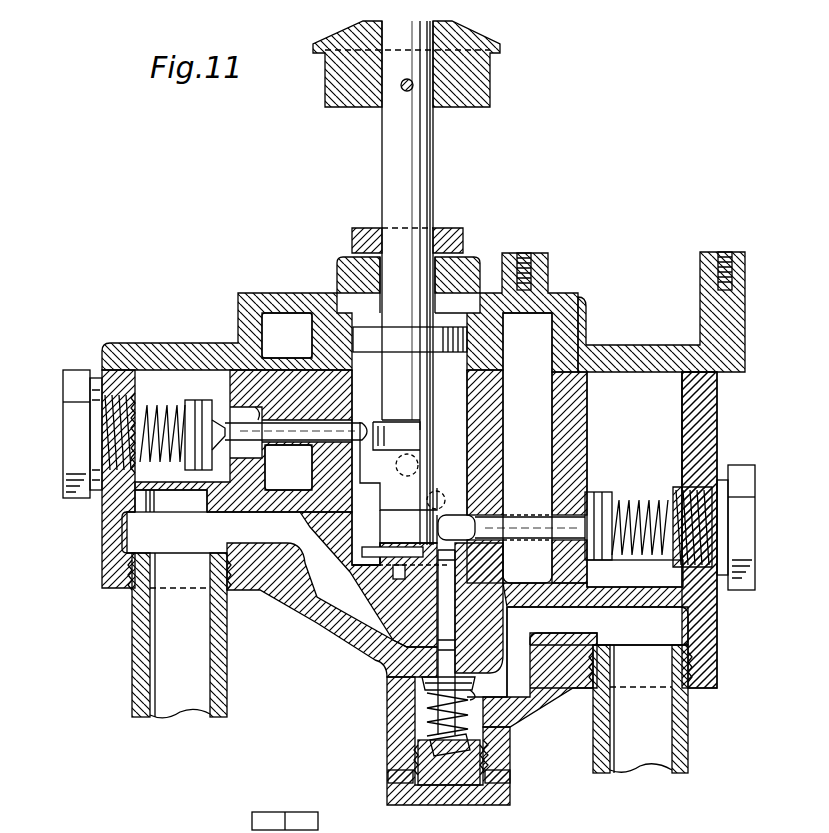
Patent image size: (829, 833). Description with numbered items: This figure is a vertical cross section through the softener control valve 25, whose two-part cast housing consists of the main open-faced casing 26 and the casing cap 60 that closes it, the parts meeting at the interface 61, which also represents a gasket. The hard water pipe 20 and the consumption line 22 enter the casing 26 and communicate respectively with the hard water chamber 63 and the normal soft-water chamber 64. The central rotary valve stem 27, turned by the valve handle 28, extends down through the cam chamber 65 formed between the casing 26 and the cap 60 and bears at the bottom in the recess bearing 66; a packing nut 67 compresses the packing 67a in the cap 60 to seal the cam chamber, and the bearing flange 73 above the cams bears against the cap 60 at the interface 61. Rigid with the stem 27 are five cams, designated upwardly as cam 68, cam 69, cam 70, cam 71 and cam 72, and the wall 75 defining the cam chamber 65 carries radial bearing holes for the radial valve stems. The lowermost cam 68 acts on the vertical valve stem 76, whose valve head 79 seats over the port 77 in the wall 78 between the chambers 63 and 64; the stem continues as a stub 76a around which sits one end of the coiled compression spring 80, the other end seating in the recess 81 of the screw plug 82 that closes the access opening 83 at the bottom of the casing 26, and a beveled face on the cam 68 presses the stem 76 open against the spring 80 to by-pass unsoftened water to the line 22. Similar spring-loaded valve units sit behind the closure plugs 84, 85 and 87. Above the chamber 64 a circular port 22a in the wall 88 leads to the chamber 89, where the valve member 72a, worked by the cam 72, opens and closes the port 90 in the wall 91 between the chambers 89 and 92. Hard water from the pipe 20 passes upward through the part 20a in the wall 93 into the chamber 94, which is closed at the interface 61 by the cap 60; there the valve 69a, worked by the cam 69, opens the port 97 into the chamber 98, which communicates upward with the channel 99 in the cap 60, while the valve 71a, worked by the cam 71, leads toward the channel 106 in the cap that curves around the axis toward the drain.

The hard water pipe 20 is at (689, 718).
The part in wall 20a is at (637, 598).
The consumption line 22 is at (214, 669).
The circular port 22a is at (186, 512).
The valve 25 is at (583, 305).
The casing 26 is at (720, 399).
The valve stem 27 is at (427, 192).
The valve handle 28 is at (487, 92).
The casing cap 60 is at (211, 343).
The interface 61 is at (158, 370).
The hard water chamber 63 is at (690, 625).
The normal soft-water chamber 64 is at (140, 556).
The cam chamber 65 is at (438, 428).
The recess bearing 66 is at (398, 580).
The packing nut 67 is at (463, 233).
The packing 67a is at (350, 286).
The cam 68 is at (365, 585).
The cam 69 is at (386, 532).
The valve 69a is at (523, 526).
The cam 70 is at (440, 494).
The cam 71 is at (370, 488).
The valve 71a is at (418, 463).
The cam 72 is at (372, 422).
The valve member 72a is at (300, 430).
The bearing flange 73 is at (405, 352).
The wall 75 is at (490, 420).
The valve stem 76 is at (457, 556).
The stub 76a is at (432, 710).
The port 77 is at (462, 662).
The wall 78 is at (505, 655).
The valve head 79 is at (420, 688).
The coiled compression spring 80 is at (472, 696).
The recess 81 is at (420, 553).
The screw plug 82 is at (455, 800).
The access opening 83 is at (500, 762).
The closure plug 84 is at (63, 427).
The closure plug 85 is at (285, 818).
The closure plug 87 is at (755, 502).
The wall 88 is at (216, 512).
The chamber 89 is at (112, 490).
The port 90 is at (262, 408).
The wall 91 is at (230, 388).
The chamber 92 is at (272, 478).
The wall 93 is at (598, 587).
The chamber 94 is at (688, 429).
The port 97 is at (580, 491).
The chamber 98 is at (515, 466).
The channel 99 is at (518, 344).
The channel 106 is at (276, 343).